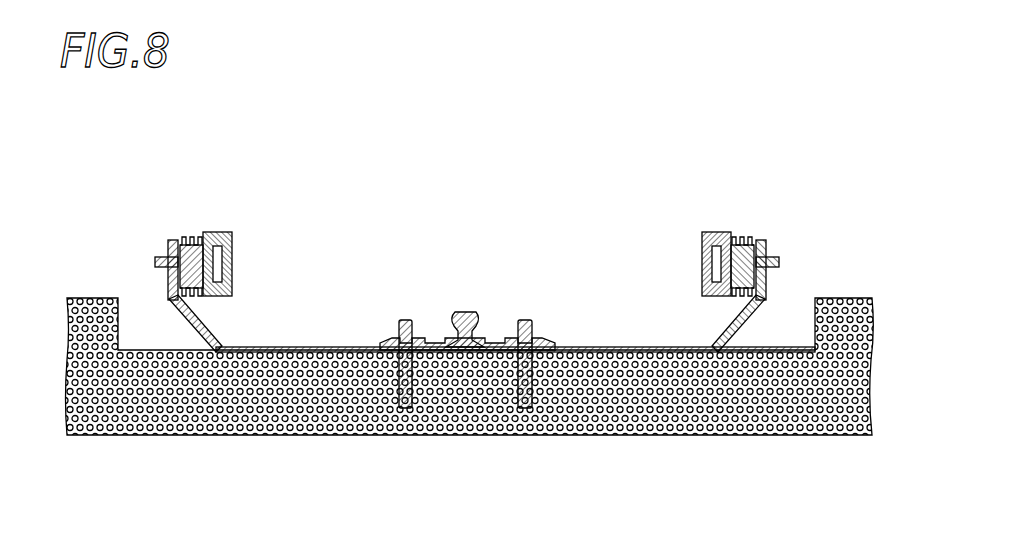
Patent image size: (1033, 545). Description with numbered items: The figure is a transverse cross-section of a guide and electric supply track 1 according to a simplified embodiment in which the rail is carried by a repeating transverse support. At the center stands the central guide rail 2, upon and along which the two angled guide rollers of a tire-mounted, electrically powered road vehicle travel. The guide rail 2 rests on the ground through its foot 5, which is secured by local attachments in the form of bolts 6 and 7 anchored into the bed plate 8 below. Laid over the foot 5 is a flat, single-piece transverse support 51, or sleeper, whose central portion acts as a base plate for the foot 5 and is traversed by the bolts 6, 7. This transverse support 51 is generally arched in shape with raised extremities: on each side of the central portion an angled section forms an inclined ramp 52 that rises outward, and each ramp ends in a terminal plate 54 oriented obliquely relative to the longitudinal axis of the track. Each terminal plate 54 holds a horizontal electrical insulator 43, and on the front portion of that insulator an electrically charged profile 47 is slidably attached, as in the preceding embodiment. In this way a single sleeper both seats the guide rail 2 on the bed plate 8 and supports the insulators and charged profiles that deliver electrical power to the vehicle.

The guide and electric supply track 1 is at (471, 305).
The central guide rail 2 is at (461, 310).
The foot 5 is at (480, 376).
The bolt 6 is at (405, 380).
The bolt 7 is at (530, 382).
The bed plate 8 is at (205, 388).
The horizontal electrical insulator 43 is at (223, 224).
The electrically charged profile 47 is at (230, 210).
The transverse support 51 is at (317, 347).
The inclined ramp 52 is at (186, 318).
The terminal plate 54 is at (170, 282).